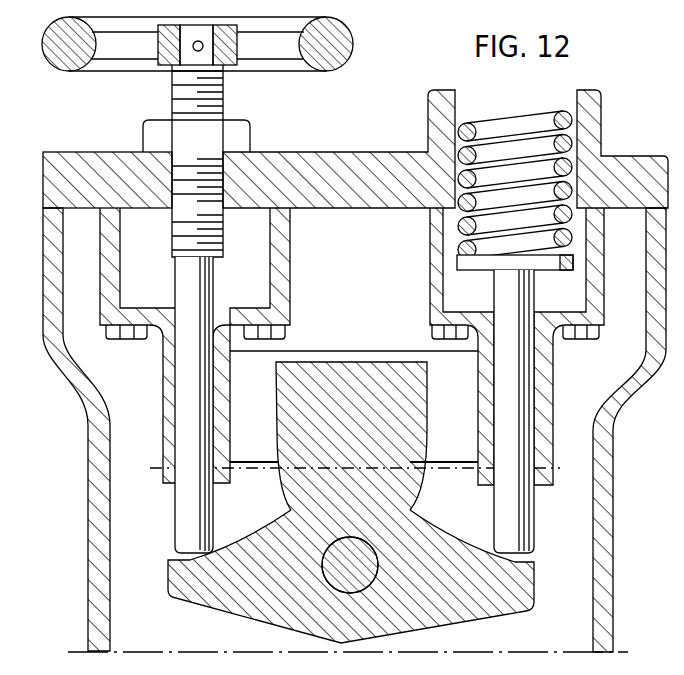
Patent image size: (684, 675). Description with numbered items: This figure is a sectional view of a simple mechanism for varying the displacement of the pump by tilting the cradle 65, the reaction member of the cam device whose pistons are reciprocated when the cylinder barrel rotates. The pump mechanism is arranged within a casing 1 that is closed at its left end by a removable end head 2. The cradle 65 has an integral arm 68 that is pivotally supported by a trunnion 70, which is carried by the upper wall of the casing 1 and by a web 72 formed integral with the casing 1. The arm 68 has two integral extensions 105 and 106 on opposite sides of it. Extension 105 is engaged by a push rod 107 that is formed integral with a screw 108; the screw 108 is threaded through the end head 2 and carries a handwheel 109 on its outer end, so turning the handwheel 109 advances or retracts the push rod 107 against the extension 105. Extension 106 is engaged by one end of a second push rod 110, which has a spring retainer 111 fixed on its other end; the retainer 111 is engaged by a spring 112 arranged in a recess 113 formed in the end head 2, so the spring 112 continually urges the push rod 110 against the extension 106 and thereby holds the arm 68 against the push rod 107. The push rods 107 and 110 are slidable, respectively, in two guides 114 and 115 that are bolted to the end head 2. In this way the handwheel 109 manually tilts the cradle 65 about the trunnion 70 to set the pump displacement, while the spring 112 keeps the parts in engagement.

The casing 1 is at (610, 545).
The end head 2 is at (55, 160).
The cradle 65 is at (358, 348).
The arm 68 is at (450, 622).
The trunnion 70 is at (335, 578).
The web 72 is at (147, 462).
The extension 105 is at (185, 578).
The extension 106 is at (529, 583).
The push rod 107 is at (183, 508).
The screw 108 is at (175, 237).
The handwheel 109 is at (117, 67).
The push rod 110 is at (528, 512).
The spring retainer 111 is at (539, 259).
The spring 112 is at (462, 232).
The recess 113 is at (571, 132).
The guide 114 is at (236, 428).
The guide 115 is at (486, 487).